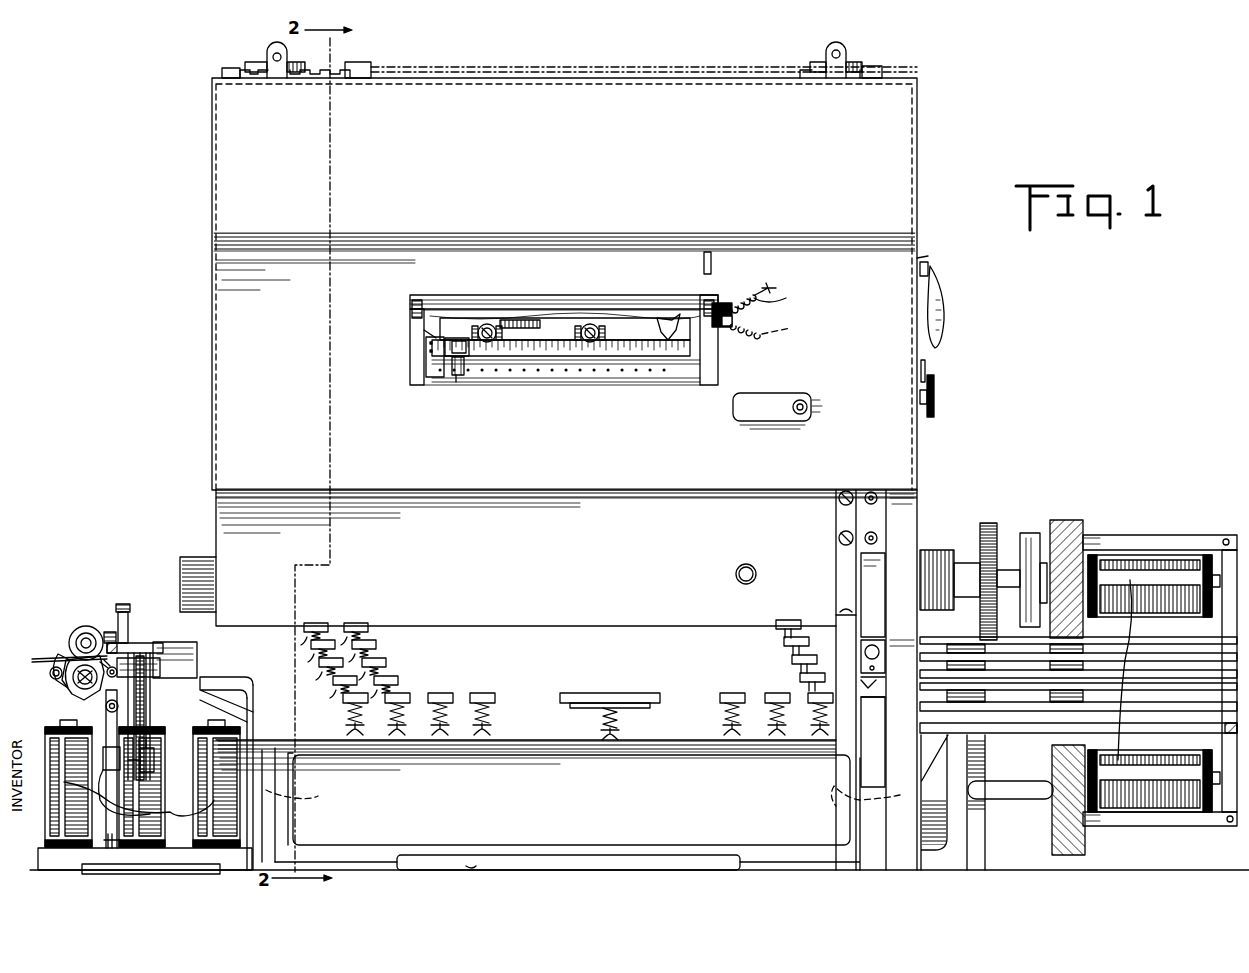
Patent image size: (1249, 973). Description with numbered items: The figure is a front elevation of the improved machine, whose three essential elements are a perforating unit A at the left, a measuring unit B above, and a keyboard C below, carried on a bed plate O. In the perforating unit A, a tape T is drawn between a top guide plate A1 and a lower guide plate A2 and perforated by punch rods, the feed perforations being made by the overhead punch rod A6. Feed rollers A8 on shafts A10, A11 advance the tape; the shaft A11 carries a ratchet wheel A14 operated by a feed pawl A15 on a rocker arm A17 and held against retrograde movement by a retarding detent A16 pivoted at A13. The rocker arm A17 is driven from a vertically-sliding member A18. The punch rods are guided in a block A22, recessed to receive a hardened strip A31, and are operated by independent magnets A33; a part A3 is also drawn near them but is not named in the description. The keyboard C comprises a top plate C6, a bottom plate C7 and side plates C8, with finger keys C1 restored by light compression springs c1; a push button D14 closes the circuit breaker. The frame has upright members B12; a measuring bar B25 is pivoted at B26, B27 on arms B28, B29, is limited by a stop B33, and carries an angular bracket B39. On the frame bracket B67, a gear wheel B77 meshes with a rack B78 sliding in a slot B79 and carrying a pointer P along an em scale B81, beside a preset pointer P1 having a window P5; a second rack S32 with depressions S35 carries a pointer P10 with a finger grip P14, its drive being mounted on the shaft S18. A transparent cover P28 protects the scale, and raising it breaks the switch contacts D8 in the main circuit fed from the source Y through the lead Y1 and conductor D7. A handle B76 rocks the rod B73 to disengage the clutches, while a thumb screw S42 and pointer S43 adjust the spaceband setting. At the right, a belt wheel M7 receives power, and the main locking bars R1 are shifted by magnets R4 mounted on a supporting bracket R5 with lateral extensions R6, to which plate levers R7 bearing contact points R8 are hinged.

The measuring unit B is at (564, 284).
The stop B33 is at (224, 69).
The measuring bar B25 is at (258, 62).
The pivot B26 is at (278, 72).
The arm B28 is at (272, 80).
The angular-shaped bracket B39 is at (362, 63).
The pivot B27 is at (845, 52).
The arm B29 is at (838, 72).
The gear wheel B77 is at (548, 320).
The slot B79 is at (470, 325).
The rack B78 is at (600, 325).
The em scale B81 is at (620, 352).
The rack S32 is at (660, 368).
The depressions S35 is at (538, 372).
The pointer indicator P is at (660, 330).
The pointer P1 is at (446, 342).
The transparent cover P28 is at (428, 350).
The window P5 is at (428, 356).
The pointer P10 is at (452, 362).
The finger grip P14 is at (458, 378).
The switch contacts D8 is at (724, 326).
The source of electric energy Y is at (778, 288).
The lead Y1 is at (780, 293).
The conductor D7 is at (797, 322).
The frame bracket B67 is at (777, 411).
The shaft S18 is at (806, 402).
The rod B73 is at (926, 264).
The handle B76 is at (942, 302).
The pointer S43 is at (926, 370).
The thumb screw S42 is at (934, 412).
The top plate C6 is at (505, 632).
The keyboard C is at (418, 748).
The bottom plate C7 is at (560, 850).
The bed plate O is at (476, 866).
The side plates C8 is at (583, 788).
The finger keys C1 is at (412, 680).
The compression springs c1 is at (410, 704).
The push button D14 is at (752, 566).
The upright frame members B12 is at (262, 637).
The belt wheel M7 is at (1030, 540).
The supporting bracket R5 is at (1066, 522).
The lateral extensions R6 is at (1110, 538).
The main locking bars R1 is at (1160, 760).
The magnets R4 is at (1130, 580).
The plate levers R7 is at (1222, 730).
The contact points R8 is at (1180, 800).
The perforating unit A is at (83, 538).
The lower guide plate A2 is at (170, 666).
The top guide plate A1 is at (150, 645).
The tape T is at (40, 658).
The feed rollers A8 is at (78, 626).
The shaft A10 is at (87, 640).
The shaft A11 is at (86, 668).
The retarding detent A16 is at (64, 664).
The pivot A13 is at (50, 674).
The ratchet wheel A14 is at (70, 690).
The overhead punch rod A6 is at (132, 628).
The feed pawl A15 is at (116, 666).
The rocker arm A17 is at (106, 706).
The plunger A3 is at (140, 700).
The hardened strip A31 is at (140, 752).
The block A22 is at (140, 764).
The magnets A33 is at (139, 781).
The vertically-sliding member A18 is at (110, 832).